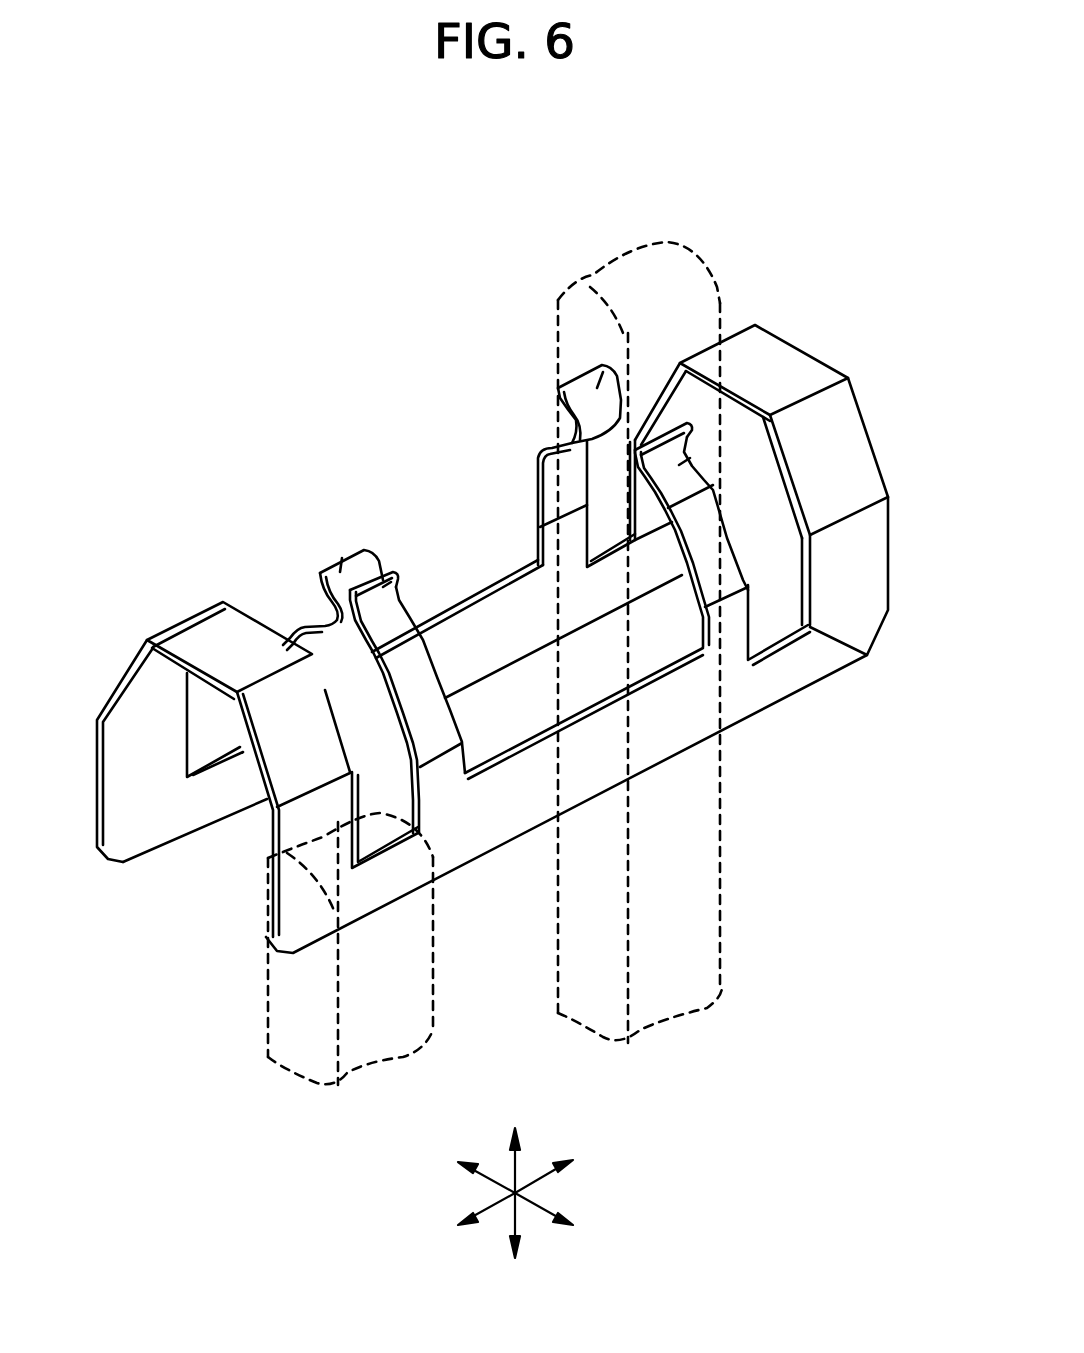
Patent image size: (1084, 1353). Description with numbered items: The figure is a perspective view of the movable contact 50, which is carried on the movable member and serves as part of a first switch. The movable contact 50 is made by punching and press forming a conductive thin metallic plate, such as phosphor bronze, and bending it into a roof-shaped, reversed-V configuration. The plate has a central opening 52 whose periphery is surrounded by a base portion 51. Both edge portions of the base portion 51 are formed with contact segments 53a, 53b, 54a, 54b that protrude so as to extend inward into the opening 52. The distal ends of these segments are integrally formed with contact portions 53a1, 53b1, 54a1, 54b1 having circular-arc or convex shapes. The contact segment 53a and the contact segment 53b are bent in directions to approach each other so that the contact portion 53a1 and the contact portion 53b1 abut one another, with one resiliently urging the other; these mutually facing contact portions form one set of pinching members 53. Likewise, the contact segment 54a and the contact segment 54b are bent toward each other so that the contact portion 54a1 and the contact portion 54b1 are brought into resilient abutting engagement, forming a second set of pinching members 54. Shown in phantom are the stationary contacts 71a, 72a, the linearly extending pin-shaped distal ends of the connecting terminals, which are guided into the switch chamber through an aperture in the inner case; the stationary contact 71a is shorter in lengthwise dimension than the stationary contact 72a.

The movable contact 50 is at (201, 285).
The base portion 51 is at (133, 830).
The opening 52 is at (486, 500).
The pinching members 53 is at (446, 445).
The contact segment 53a is at (437, 733).
The contact portion 53a1 is at (383, 580).
The contact segment 53b is at (298, 617).
The contact portion 53b1 is at (342, 558).
The pinching members 54 is at (783, 170).
The contact segment 54a is at (735, 581).
The contact portion 54a1 is at (682, 462).
The contact segment 54b is at (537, 445).
The contact portion 54b1 is at (598, 388).
The stationary contact 71a is at (300, 1052).
The stationary contact 72a is at (690, 930).